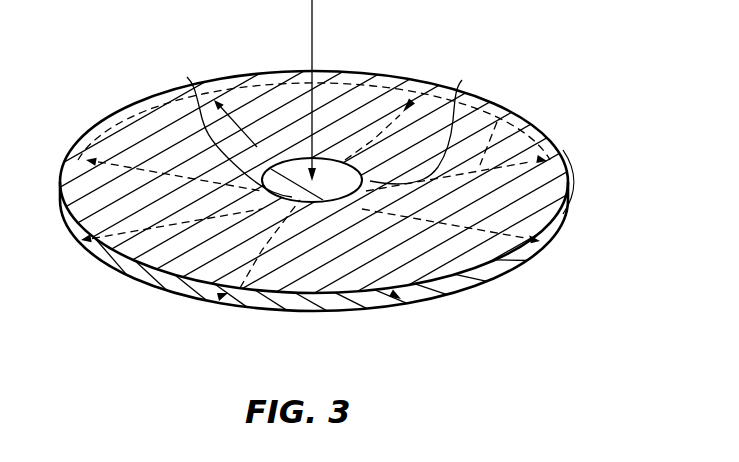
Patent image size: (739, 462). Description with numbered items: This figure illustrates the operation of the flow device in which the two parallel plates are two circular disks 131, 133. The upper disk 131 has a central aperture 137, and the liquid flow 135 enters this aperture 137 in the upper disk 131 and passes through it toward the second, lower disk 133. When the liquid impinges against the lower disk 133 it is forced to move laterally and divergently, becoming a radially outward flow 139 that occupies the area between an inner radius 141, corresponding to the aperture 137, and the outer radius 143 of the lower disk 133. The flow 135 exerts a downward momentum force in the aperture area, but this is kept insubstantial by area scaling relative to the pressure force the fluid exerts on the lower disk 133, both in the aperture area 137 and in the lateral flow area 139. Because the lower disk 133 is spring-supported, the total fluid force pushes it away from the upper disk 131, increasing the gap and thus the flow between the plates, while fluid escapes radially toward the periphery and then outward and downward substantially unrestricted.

The upper circular disk 131 is at (119, 116).
The lower circular disk 133 is at (173, 286).
The liquid flow 135 is at (312, 40).
The central aperture 137 is at (187, 77).
The radially outward flow 139 is at (511, 106).
The inner radius 141 is at (462, 80).
The outer radius 143 is at (569, 172).